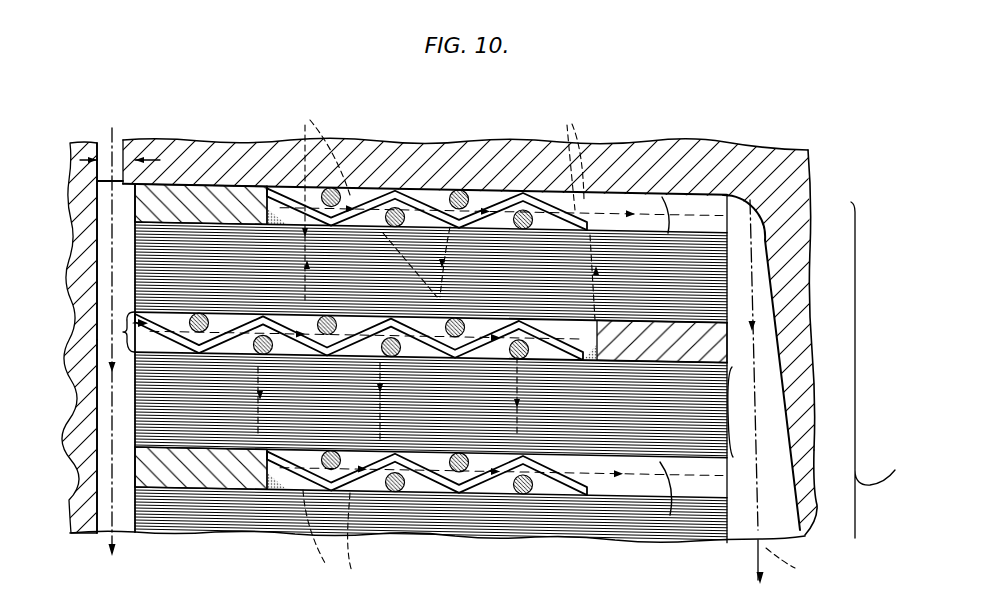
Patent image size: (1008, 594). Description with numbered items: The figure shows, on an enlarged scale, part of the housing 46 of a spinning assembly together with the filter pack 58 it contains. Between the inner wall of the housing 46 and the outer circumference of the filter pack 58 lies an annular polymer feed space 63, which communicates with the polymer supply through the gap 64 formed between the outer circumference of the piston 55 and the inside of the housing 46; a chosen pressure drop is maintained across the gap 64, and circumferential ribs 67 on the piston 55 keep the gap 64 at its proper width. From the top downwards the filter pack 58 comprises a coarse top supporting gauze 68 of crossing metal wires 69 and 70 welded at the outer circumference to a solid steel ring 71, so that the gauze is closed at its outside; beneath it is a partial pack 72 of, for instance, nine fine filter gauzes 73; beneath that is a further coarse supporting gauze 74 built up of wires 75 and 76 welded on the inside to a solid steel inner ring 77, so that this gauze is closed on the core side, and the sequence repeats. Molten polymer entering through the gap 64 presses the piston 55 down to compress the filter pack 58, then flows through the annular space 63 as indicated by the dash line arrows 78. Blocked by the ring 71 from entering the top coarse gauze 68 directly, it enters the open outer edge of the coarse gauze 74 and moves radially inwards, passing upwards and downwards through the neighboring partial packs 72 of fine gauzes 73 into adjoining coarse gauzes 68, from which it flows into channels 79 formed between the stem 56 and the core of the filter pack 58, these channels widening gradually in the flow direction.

The housing 46 is at (72, 537).
The piston 55 is at (258, 152).
The stem 56 is at (803, 353).
The filter pack 58 is at (875, 370).
The annular polymer feed space 63 is at (97, 507).
The gap 64 is at (107, 155).
The ribs 67 is at (97, 172).
The coarse top supporting gauze 68 is at (672, 196).
The metal wire 69 is at (451, 187).
The metal wire 70 is at (533, 187).
The solid steel ring 71 is at (170, 190).
The partial pack 72 is at (745, 280).
The fine filter gauze 73 is at (135, 248).
The coarse supporting gauze 74 is at (125, 325).
The wire 75 is at (403, 357).
The wire 76 is at (467, 355).
The solid steel inner ring 77 is at (722, 356).
The dash line arrows 78 is at (108, 292).
The channels 79 is at (792, 457).